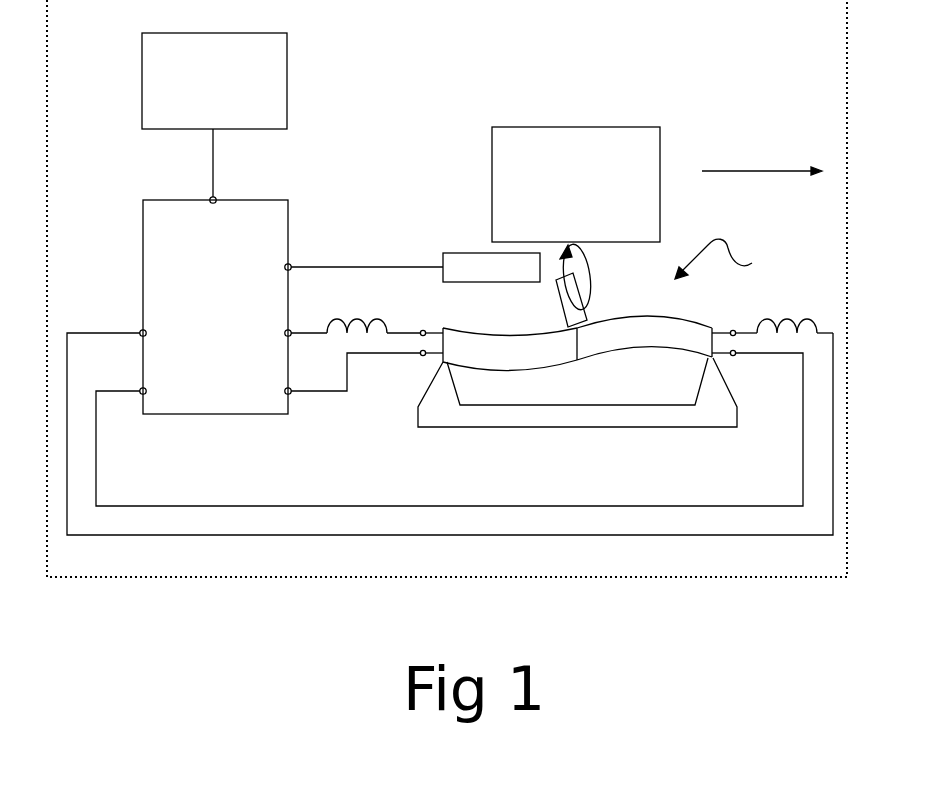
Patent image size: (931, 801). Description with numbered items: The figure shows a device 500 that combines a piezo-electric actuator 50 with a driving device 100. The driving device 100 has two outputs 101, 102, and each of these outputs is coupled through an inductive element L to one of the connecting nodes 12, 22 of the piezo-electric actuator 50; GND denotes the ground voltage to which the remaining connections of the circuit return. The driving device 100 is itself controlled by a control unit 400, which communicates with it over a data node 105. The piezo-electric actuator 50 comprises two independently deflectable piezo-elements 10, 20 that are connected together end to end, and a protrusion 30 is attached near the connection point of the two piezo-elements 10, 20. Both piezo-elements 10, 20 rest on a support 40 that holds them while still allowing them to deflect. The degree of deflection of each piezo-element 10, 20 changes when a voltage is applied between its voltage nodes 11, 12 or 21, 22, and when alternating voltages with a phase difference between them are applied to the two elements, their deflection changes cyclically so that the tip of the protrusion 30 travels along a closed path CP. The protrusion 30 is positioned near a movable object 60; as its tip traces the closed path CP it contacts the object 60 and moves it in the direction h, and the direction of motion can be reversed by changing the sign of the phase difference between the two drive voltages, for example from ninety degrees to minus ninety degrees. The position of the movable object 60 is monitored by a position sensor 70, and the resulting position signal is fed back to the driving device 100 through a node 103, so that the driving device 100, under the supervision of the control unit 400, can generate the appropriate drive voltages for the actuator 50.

The piezo-element 10 is at (676, 320).
The voltage node 11 is at (736, 356).
The connecting node 12 is at (736, 331).
The piezo-element 20 is at (470, 328).
The voltage node 21 is at (420, 356).
The connecting node 22 is at (420, 330).
The protrusion 30 is at (560, 305).
The support 40 is at (680, 427).
The piezo-electric actuator 50 is at (729, 259).
The movable object 60 is at (660, 178).
The position sensor 70 is at (449, 253).
The driving device 100 is at (232, 414).
The output 101 is at (291, 331).
The output 102 is at (140, 331).
The node 103 is at (291, 265).
The data node 105 is at (216, 198).
The control unit 400 is at (287, 84).
The device 500 is at (680, 578).
The inductive element L is at (562, 311).
The closed path CP is at (590, 270).
The direction h is at (762, 159).
The ground voltage GND is at (140, 389).